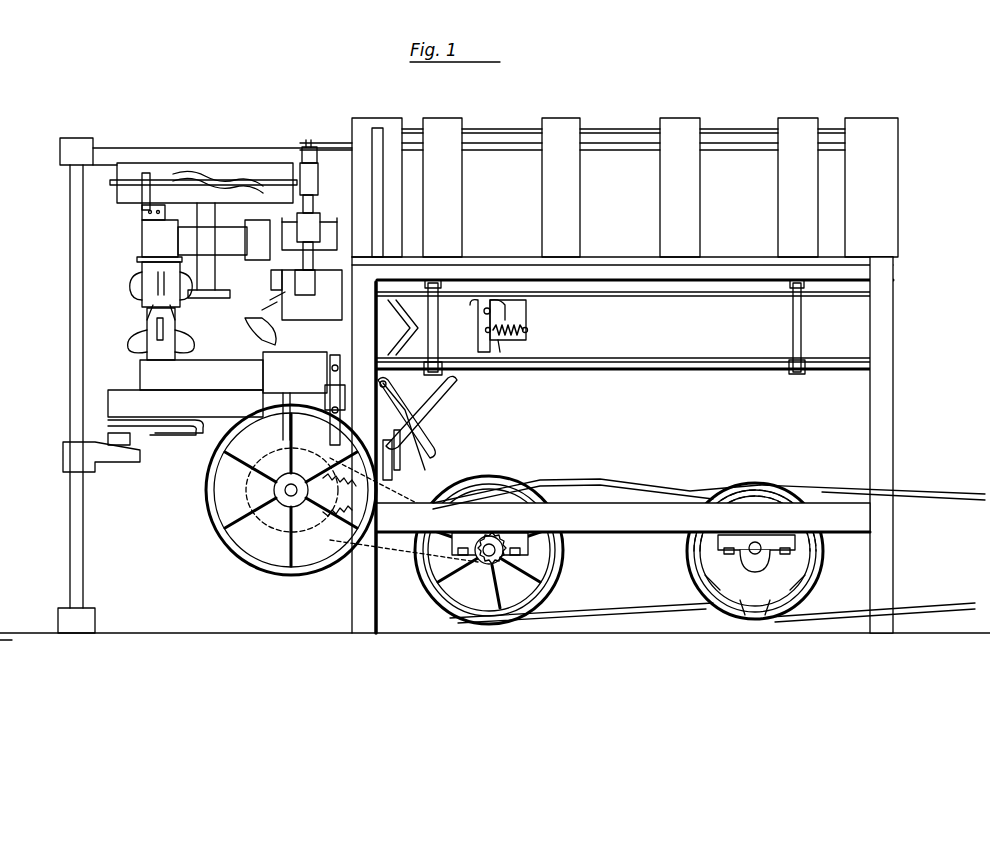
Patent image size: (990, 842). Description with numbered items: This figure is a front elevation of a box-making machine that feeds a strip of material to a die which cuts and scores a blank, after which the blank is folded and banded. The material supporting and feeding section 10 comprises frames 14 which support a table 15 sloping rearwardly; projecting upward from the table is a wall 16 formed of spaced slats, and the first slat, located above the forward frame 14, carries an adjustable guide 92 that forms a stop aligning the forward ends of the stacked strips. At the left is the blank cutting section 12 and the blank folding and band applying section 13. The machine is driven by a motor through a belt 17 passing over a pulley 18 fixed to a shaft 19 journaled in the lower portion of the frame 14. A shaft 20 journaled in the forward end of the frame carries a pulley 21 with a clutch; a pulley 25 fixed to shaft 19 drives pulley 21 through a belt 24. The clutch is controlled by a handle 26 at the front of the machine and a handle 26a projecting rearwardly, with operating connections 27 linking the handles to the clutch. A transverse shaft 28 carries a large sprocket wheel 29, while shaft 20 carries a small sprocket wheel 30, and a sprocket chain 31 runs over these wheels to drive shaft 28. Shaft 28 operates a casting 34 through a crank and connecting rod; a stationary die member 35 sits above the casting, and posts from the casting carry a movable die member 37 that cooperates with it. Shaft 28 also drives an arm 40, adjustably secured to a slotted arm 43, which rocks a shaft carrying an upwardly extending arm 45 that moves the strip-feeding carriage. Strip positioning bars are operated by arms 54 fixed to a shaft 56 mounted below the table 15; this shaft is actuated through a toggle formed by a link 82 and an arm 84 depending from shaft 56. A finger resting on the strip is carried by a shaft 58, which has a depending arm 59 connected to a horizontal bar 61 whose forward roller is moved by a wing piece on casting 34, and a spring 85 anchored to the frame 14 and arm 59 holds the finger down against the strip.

The material supporting and feeding section 10 is at (507, 126).
The blank cutting section 12 is at (327, 205).
The blank folding and band applying section 13 is at (125, 258).
The frame 14 is at (892, 400).
The table 15 is at (858, 262).
The wall of slats 16 is at (668, 128).
The belt 17 is at (935, 494).
The pulley 18 is at (815, 580).
The shaft 19 is at (756, 545).
The shaft 20 is at (491, 545).
The pulley 21 is at (558, 556).
The belt 24 is at (637, 488).
The pulley 25 is at (690, 578).
The handle 26 is at (330, 374).
The handle 26a is at (452, 386).
The operating connections 27 is at (395, 462).
The shaft 28 is at (287, 496).
The large sprocket wheel 29 is at (271, 498).
The small sprocket wheel 30 is at (490, 565).
The sprocket chain 31 is at (408, 550).
The casting 34 is at (308, 364).
The stationary die member 35 is at (302, 295).
The movable die member 37 is at (309, 241).
The arm 40 is at (418, 412).
The arm 43 is at (432, 446).
The arm 45 is at (408, 327).
The arms 54 is at (440, 312).
The shaft 56 is at (654, 366).
The shaft 58 is at (490, 311).
The depending arm 59 is at (485, 330).
The bar 61 is at (476, 344).
The link 82 is at (348, 400).
The arm 84 is at (345, 400).
The spring 85 is at (513, 332).
The guide 92 is at (375, 207).